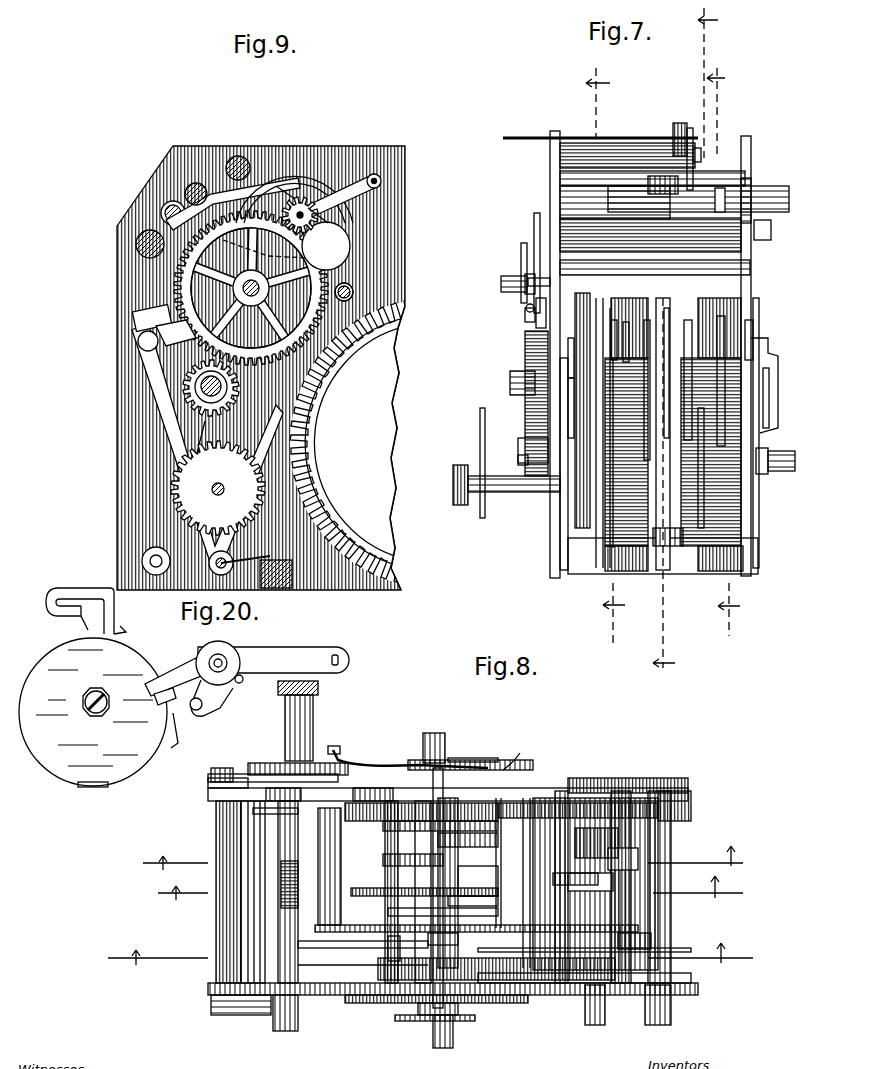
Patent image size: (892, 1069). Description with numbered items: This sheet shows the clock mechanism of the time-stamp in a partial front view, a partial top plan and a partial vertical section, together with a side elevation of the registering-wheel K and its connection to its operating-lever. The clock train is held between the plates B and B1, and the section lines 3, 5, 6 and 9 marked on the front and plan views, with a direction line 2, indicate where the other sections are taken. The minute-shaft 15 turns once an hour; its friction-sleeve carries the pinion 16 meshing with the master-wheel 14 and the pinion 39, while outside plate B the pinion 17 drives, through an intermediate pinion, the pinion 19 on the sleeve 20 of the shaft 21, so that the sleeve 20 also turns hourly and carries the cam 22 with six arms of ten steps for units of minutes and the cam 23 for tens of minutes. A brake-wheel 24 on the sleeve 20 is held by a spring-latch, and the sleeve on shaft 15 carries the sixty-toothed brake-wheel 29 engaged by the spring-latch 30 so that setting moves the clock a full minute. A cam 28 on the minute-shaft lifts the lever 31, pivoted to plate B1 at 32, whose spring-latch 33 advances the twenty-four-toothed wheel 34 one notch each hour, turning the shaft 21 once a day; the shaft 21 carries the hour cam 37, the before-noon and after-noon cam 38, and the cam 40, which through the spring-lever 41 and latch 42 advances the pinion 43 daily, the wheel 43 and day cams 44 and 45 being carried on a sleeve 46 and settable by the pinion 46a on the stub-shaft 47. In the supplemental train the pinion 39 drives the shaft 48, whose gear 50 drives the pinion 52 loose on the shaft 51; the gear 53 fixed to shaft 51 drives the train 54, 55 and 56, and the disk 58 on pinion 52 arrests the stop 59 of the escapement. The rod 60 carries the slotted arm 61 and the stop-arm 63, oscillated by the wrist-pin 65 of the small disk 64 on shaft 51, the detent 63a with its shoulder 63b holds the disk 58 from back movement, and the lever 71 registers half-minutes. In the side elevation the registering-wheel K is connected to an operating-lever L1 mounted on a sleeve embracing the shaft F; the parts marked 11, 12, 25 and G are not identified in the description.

In FIG. 7, the clock plate B is at (745, 170).
In FIG. 8, the clock plate B is at (548, 988).
In FIG. 9, the clock plate B1 is at (125, 292).
In FIG. 7, the clock plate B1 is at (543, 140).
In FIG. 8, the clock plate B1 is at (570, 779).
In FIG. 7, the section line 2 is at (708, 83).
In FIG. 7, the section line 3 is at (723, 348).
In FIG. 8, the section line 3 is at (435, 954).
In FIG. 7, the section line 5 is at (664, 490).
In FIG. 8, the section line 5 is at (449, 888).
In FIG. 8, the section line 6 is at (444, 858).
In FIG. 7, the section line 9 is at (605, 356).
In FIG. 7, the shaft 11 is at (603, 440).
In FIG. 8, the shaft 11 is at (612, 835).
In FIG. 8, the gear 12 is at (683, 794).
In FIG. 7, the master-wheel 14 is at (695, 418).
In FIG. 8, the master-wheel 14 is at (645, 930).
In FIG. 9, the minute-shaft 15 is at (344, 286).
In FIG. 7, the minute-shaft 15 is at (495, 283).
In FIG. 8, the minute-shaft 15 is at (432, 1040).
In FIG. 8, the pinion 16 is at (468, 1000).
In FIG. 8, the pinion 17 is at (417, 1002).
In FIG. 7, the pinion 19 is at (770, 335).
In FIG. 7, the sleeve 20 is at (711, 422).
In FIG. 9, the cam-shaft 21 is at (200, 382).
In FIG. 7, the cam-shaft 21 is at (776, 370).
In FIG. 7, the units-of-minutes cam 22 is at (714, 310).
In FIG. 7, the tens-of-minutes cam 23 is at (682, 313).
In FIG. 7, the brake-wheel 24 is at (540, 211).
In FIG. 7, the arm 25 is at (737, 418).
In FIG. 8, the cam 28 is at (432, 752).
In FIG. 8, the brake-wheel 29 is at (466, 757).
In FIG. 8, the spring-latch 30 is at (515, 753).
In FIG. 8, the lever 31 is at (365, 751).
In FIG. 8, the pivot 32 is at (215, 763).
In FIG. 7, the spring-latch 33 is at (526, 300).
In FIG. 8, the spring-latch 33 is at (328, 767).
In FIG. 7, the wheel 34 is at (518, 400).
In FIG. 8, the wheel 34 is at (312, 752).
In FIG. 7, the hour cam 37 is at (659, 300).
In FIG. 7, the A.M./P.M. cam 38 is at (639, 312).
In FIG. 8, the pinion 39 is at (424, 884).
In FIG. 9, the cam 40 is at (218, 392).
In FIG. 9, the spring-lever 41 is at (142, 360).
In FIG. 7, the spring-lever 41 is at (572, 323).
In FIG. 7, the latch 42 is at (565, 345).
In FIG. 9, the pinion 43 is at (247, 390).
In FIG. 7, the pinion 43 is at (611, 410).
In FIG. 7, the units-of-days cam 44 is at (618, 315).
In FIG. 7, the tens-of-days cam 45 is at (605, 313).
In FIG. 7, the sleeve 46 is at (626, 443).
In FIG. 9, the pinion 46a is at (218, 488).
In FIG. 9, the stub-shaft 47 is at (213, 484).
In FIG. 7, the stub-shaft 47 is at (528, 488).
In FIG. 8, the stub-shaft 47 is at (310, 716).
In FIG. 9, the shaft 48 is at (246, 282).
In FIG. 9, the gear 50 is at (251, 288).
In FIG. 9, the shaft 51 is at (297, 200).
In FIG. 8, the shaft 51 is at (380, 908).
In FIG. 9, the pinion 52 is at (320, 200).
In FIG. 8, the pinion 52 is at (376, 820).
In FIG. 8, the gear 53 is at (376, 853).
In FIG. 8, the escapement-wheel 54 is at (452, 888).
In FIG. 8, the train wheel 55 is at (478, 881).
In FIG. 8, the train wheel 56 is at (574, 872).
In FIG. 9, the disk 58 is at (326, 246).
In FIG. 8, the disk 58 is at (370, 803).
In FIG. 8, the stop 59 is at (432, 832).
In FIG. 9, the rod 60 is at (160, 195).
In FIG. 8, the rod 60 is at (253, 843).
In FIG. 8, the arm 61 is at (310, 942).
In FIG. 9, the stop-arm 63 is at (322, 218).
In FIG. 8, the stop-arm 63 is at (270, 806).
In FIG. 9, the detent 63a is at (207, 147).
In FIG. 9, the shoulder 63b is at (258, 195).
In FIG. 8, the disk 64 is at (380, 924).
In FIG. 9, the wrist-pin 65 is at (262, 252).
In FIG. 8, the wrist-pin 65 is at (383, 938).
In FIG. 7, the lever 71 is at (678, 538).
In FIG. 20, the hook G is at (111, 599).
In FIG. 20, the registering-wheel K is at (93, 712).
In FIG. 20, the operating-lever L1 is at (278, 648).
In FIG. 20, the shaft F is at (212, 668).